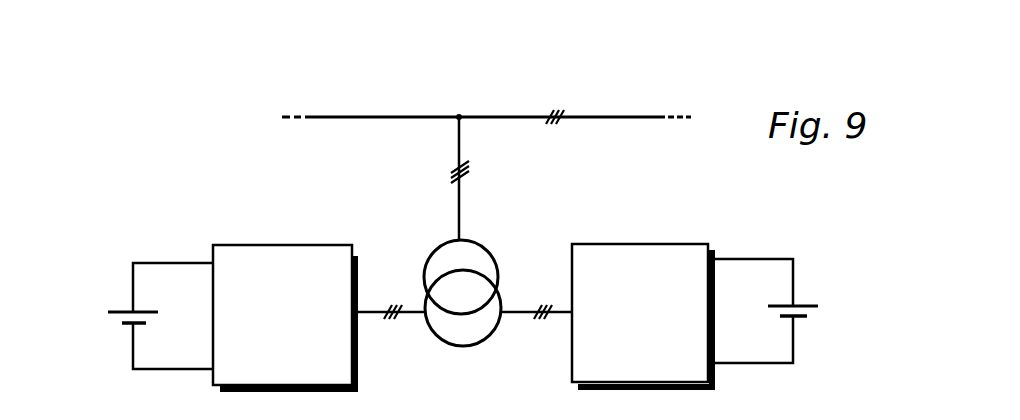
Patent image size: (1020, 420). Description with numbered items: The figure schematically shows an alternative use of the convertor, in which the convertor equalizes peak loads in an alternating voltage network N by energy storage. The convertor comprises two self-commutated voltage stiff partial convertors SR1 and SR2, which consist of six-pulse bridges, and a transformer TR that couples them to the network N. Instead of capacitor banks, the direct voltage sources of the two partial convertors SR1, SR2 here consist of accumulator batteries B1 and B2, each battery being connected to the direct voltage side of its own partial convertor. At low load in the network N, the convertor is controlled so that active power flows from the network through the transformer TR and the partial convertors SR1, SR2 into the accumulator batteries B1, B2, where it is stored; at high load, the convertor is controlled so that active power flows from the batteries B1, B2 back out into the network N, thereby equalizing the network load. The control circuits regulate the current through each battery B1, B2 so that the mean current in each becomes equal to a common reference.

The alternating voltage power network N is at (615, 112).
The transformer TR is at (488, 245).
The first partial convertor SR1 is at (343, 373).
The second partial convertor SR2 is at (698, 372).
The accumulator battery B1 is at (118, 304).
The accumulator battery B2 is at (803, 298).